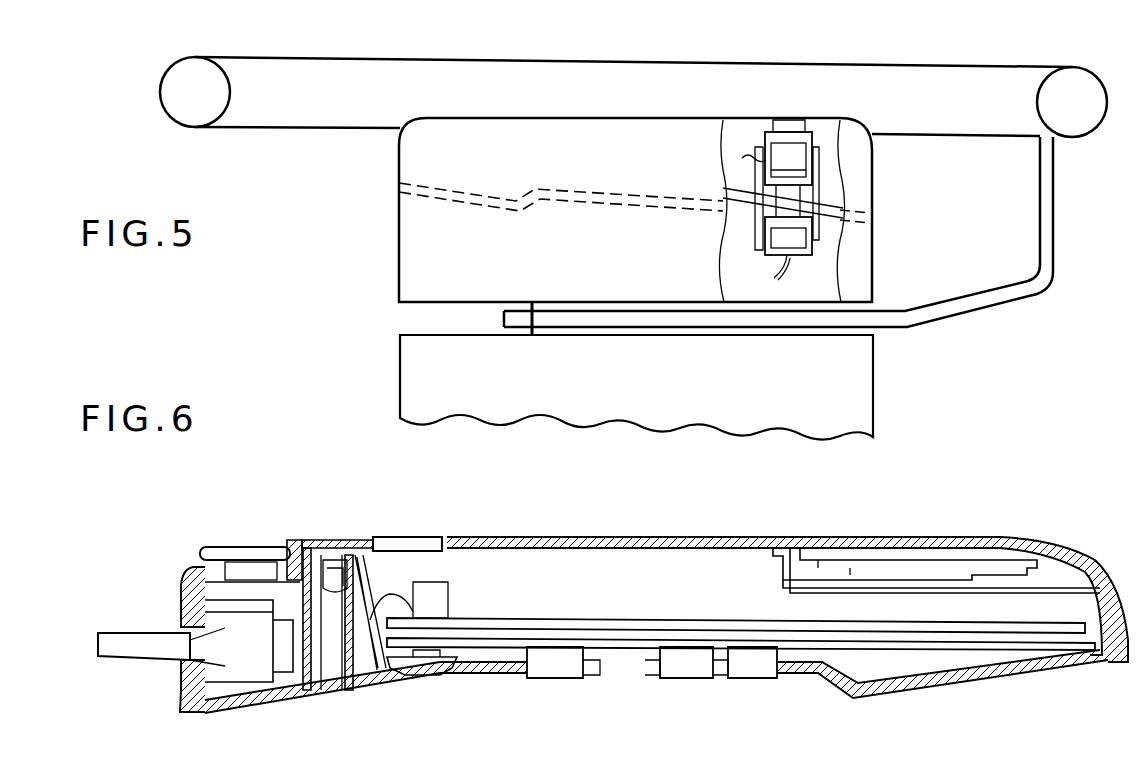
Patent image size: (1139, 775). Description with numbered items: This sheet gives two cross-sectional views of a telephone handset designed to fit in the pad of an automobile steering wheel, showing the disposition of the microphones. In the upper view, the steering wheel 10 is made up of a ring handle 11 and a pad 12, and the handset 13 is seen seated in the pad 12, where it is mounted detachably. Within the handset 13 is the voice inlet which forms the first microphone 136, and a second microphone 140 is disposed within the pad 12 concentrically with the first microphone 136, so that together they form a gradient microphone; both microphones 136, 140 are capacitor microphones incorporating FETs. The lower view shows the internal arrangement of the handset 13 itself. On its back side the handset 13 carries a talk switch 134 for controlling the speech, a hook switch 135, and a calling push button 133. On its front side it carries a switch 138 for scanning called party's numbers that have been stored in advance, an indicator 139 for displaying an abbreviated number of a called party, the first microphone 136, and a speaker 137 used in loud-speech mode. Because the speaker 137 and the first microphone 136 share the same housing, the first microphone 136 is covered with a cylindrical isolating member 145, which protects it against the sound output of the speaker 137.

In FIG. 5, the steering wheel 10 is at (862, 62).
In FIG. 5, the ring handle 11 is at (975, 66).
In FIG. 5, the pad 12 is at (399, 247).
In FIG. 5, the handset 13 is at (447, 118).
In FIG. 6, the handset 13 is at (706, 532).
In FIG. 5, the voice inlet (first microphone) 136 is at (782, 145).
In FIG. 6, the voice inlet (first microphone) 136 is at (335, 575).
In FIG. 5, the second microphone 140 is at (814, 250).
In FIG. 6, the talk switch 134 is at (120, 645).
In FIG. 6, the switch for scanning called party's numbers 138 is at (208, 550).
In FIG. 6, the indicator 139 is at (410, 537).
In FIG. 6, the cylindrical isolating member 145 is at (323, 672).
In FIG. 6, the hook switch 135 is at (435, 677).
In FIG. 6, the calling push button 133 is at (567, 678).
In FIG. 6, the speaker 137 is at (918, 556).